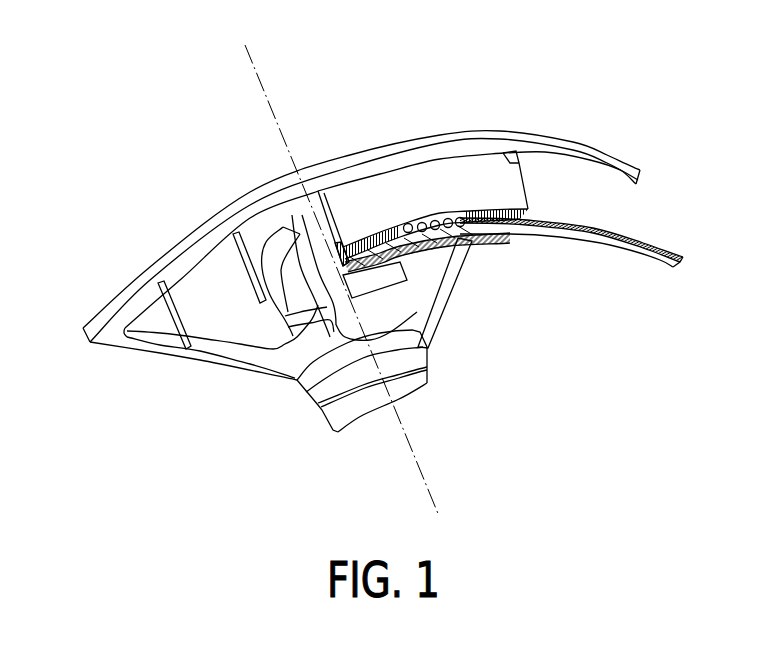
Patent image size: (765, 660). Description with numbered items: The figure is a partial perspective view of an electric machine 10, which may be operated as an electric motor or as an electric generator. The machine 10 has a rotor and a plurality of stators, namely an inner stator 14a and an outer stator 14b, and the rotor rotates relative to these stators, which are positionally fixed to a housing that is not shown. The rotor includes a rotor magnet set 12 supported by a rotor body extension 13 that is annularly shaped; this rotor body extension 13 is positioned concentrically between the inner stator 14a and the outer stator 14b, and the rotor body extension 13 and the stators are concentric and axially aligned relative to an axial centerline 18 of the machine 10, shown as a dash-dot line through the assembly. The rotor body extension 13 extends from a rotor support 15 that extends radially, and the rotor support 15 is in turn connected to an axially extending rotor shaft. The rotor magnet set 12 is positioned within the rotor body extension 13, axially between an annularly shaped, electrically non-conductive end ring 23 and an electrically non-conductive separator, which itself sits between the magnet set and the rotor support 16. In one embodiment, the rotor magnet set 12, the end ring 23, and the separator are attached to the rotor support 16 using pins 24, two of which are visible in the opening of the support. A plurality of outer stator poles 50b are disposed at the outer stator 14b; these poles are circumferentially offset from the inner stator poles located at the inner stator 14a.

The electric machine 10 is at (148, 132).
The rotor magnet set 12 is at (345, 254).
The rotor body extension 13 is at (390, 253).
The inner stator 14a is at (516, 252).
The outer stator 14b is at (480, 163).
The rotor support 15 is at (321, 392).
The rotor support 16 is at (210, 366).
The axial centerline 18 is at (273, 108).
The end ring 23 is at (552, 227).
The pins 24 is at (247, 263).
The outer stator poles 50b is at (422, 246).